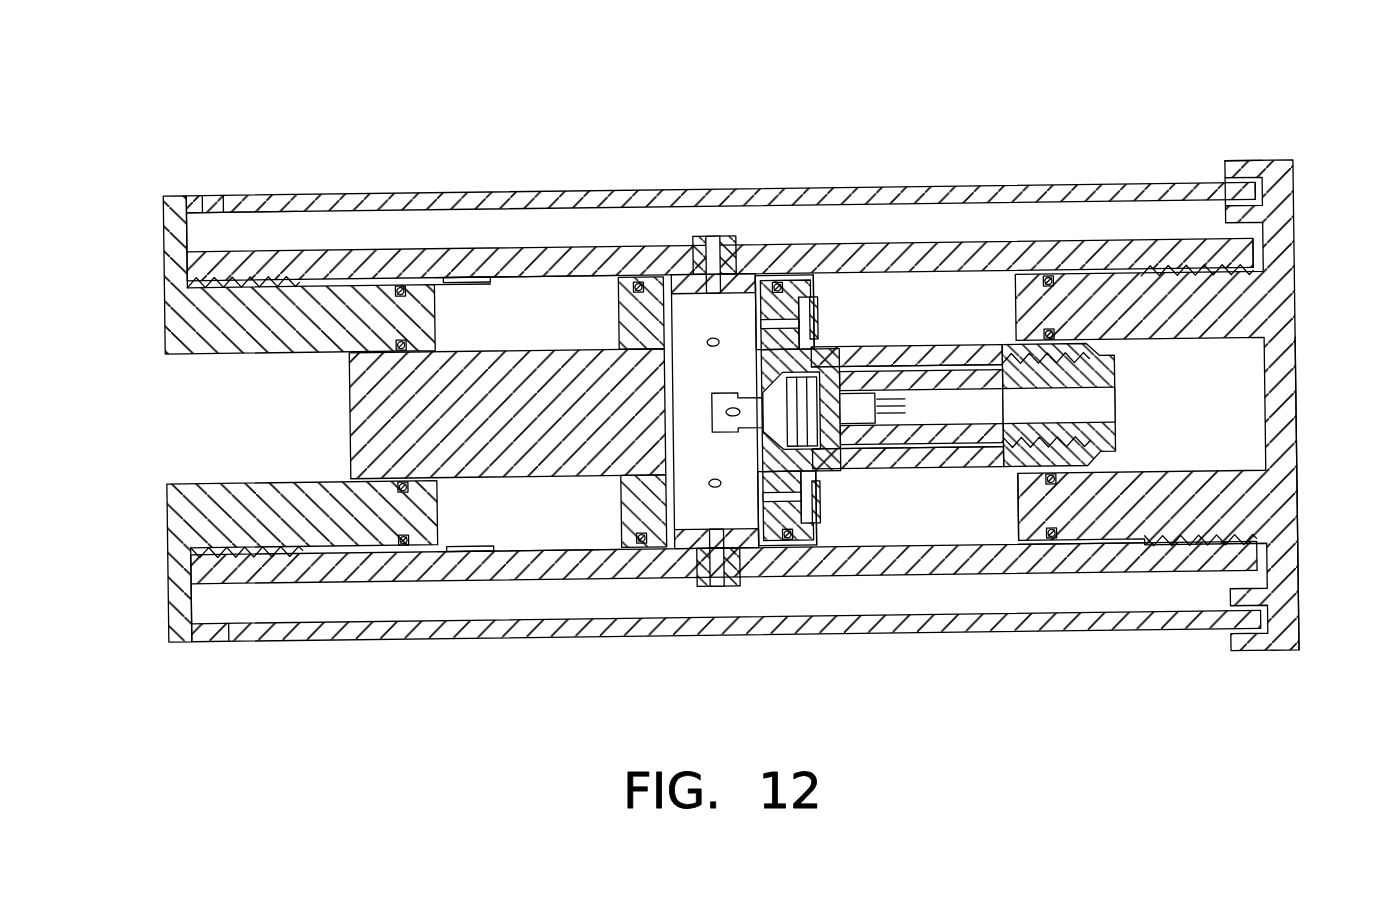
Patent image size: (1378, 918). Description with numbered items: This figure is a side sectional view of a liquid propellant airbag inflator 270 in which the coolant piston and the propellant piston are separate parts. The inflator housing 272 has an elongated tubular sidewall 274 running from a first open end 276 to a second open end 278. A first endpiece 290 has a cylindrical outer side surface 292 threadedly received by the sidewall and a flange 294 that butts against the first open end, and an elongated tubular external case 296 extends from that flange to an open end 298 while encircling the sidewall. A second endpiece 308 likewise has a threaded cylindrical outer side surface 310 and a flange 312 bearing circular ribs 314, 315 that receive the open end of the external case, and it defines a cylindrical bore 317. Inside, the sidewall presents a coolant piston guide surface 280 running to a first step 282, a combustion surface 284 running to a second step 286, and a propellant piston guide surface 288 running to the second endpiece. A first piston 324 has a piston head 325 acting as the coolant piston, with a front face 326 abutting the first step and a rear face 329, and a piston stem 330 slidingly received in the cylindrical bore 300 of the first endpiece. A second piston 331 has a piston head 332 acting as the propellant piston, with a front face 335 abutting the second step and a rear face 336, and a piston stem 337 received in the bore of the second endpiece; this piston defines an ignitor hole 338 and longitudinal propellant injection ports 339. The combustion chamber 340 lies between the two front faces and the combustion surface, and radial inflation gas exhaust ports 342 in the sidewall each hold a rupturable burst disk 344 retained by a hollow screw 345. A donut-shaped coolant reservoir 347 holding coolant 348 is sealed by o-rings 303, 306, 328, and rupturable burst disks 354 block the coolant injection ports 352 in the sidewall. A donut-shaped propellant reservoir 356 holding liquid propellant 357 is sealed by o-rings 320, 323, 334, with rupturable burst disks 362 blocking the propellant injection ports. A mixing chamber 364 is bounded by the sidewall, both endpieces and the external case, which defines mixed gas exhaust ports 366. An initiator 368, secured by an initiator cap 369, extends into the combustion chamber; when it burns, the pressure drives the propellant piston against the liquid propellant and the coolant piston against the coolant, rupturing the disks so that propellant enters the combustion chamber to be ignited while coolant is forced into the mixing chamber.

The airbag inflator 270 is at (782, 84).
The inflator housing 272 is at (735, 184).
The tubular sidewall 274 is at (1062, 250).
The first open end 276 is at (189, 255).
The second open end 278 is at (1264, 255).
The coolant piston guide surface 280 is at (297, 278).
The first step 282 is at (675, 447).
The combustion surface 284 is at (776, 550).
The second step 286 is at (796, 553).
The propellant piston guide surface 288 is at (1098, 545).
The first endpiece 290 is at (165, 338).
The cylindrical outer side surface 292 is at (308, 578).
The flange 294 is at (166, 583).
The external case 296 is at (305, 189).
The open end 298 is at (1265, 197).
The cylindrical bore 300 is at (199, 475).
The o-ring 303 is at (395, 476).
The o-ring 306 is at (406, 548).
The second endpiece 308 is at (1297, 539).
The cylindrical outer side surface 310 is at (1128, 559).
The flange 312 is at (1298, 174).
The circular rib 314 is at (1234, 167).
The circular rib 315 is at (1233, 186).
The cylindrical bore 317 is at (1298, 462).
The o-ring 320 is at (1088, 356).
The o-ring 323 is at (1060, 553).
The first piston 324 is at (562, 266).
The piston head 325 is at (653, 564).
The front face 326 is at (639, 550).
The o-ring 328 is at (617, 261).
The rear face 329 is at (573, 588).
The piston stem 330 is at (350, 413).
The second piston 331 is at (933, 336).
The piston head 332 is at (790, 546).
The o-ring 334 is at (797, 281).
The front face 335 is at (1013, 548).
The rear face 336 is at (813, 523).
The piston stem 337 is at (993, 371).
The ignitor hole 338 is at (1115, 410).
The propellant injection ports 339 is at (800, 330).
The combustion chamber 340 is at (691, 386).
The inflation gas exhaust ports 342 is at (714, 416).
The rupturable burst disk 344 is at (645, 283).
The hollow screw 345 is at (708, 236).
The coolant reservoir 347 is at (602, 345).
The coolant 348 is at (524, 345).
The coolant injection ports 352 is at (470, 267).
The rupturable burst disks 354 is at (457, 291).
The propellant reservoir 356 is at (945, 343).
The liquid propellant 357 is at (869, 328).
The rupturable burst disks 362 is at (822, 306).
The mixing chamber 364 is at (263, 217).
The mixed gas exhaust ports 366 is at (208, 190).
The initiator 368 is at (878, 407).
The initiator cap 369 is at (975, 398).